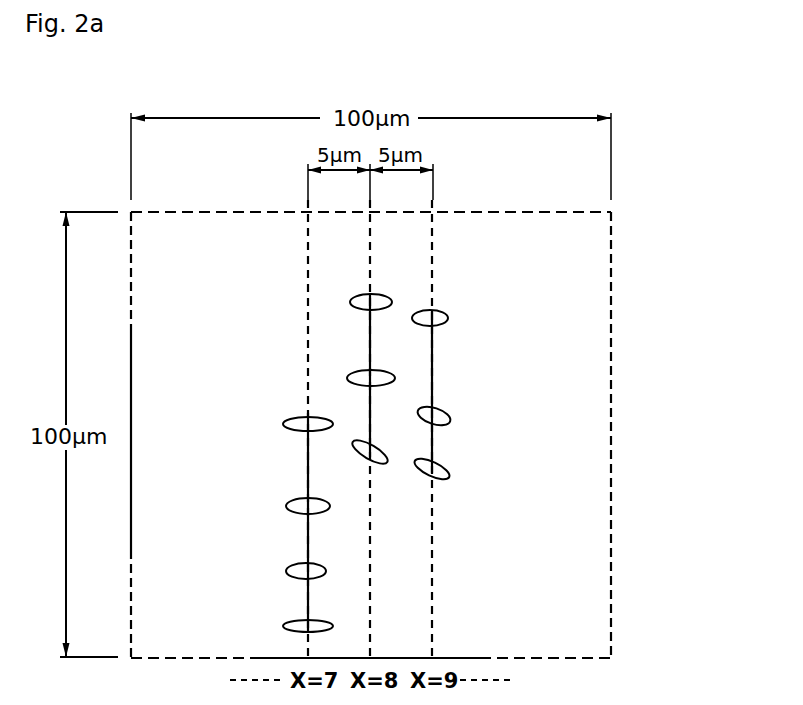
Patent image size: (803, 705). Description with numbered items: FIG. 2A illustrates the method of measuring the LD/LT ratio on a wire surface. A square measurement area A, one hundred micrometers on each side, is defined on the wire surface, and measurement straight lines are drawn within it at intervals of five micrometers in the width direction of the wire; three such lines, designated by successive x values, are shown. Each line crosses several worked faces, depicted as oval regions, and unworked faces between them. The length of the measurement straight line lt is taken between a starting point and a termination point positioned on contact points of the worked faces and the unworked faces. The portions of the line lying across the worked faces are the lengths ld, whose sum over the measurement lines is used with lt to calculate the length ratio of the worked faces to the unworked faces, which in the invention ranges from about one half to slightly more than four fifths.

The measurement area A is at (632, 224).
The length of the measurement straight lines lt is at (308, 460).
The sum of lengths of the measured straight lines across the worked faces ld is at (290, 506).